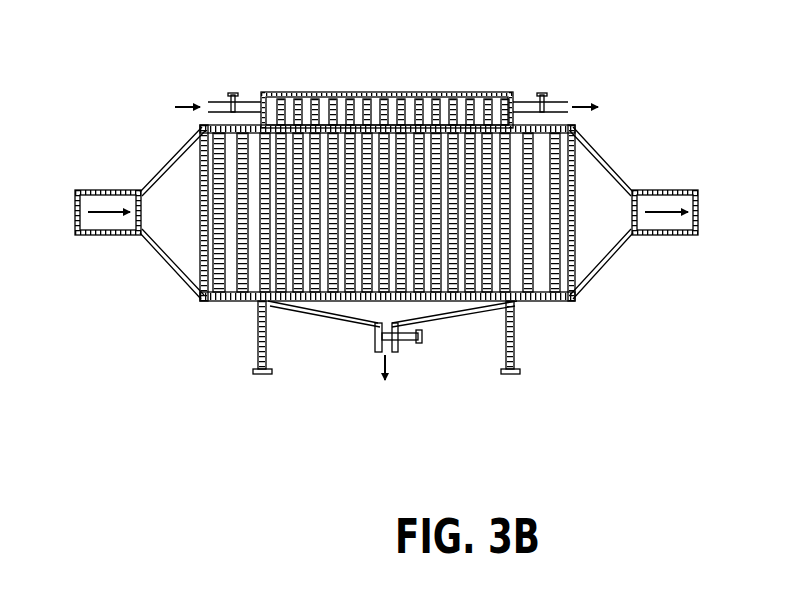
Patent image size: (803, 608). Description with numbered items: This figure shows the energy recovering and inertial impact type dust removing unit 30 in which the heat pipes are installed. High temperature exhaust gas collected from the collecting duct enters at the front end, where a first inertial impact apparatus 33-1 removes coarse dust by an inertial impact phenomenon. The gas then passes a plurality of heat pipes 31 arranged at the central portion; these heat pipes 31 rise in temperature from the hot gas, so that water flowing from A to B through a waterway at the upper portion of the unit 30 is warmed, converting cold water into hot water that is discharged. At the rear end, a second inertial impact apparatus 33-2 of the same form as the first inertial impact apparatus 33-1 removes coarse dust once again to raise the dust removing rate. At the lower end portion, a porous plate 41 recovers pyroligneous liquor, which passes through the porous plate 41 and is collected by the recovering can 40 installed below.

The energy recovering and inertial impact type dust removing unit 30 is at (582, 31).
The heat pipes 31 is at (425, 99).
The first inertial impact apparatus 33-1 is at (212, 160).
The second inertial impact apparatus 33-2 is at (562, 150).
The pyroligneous liquor or oil vapor recovering can 40 is at (440, 342).
The porous plate 41 is at (477, 304).